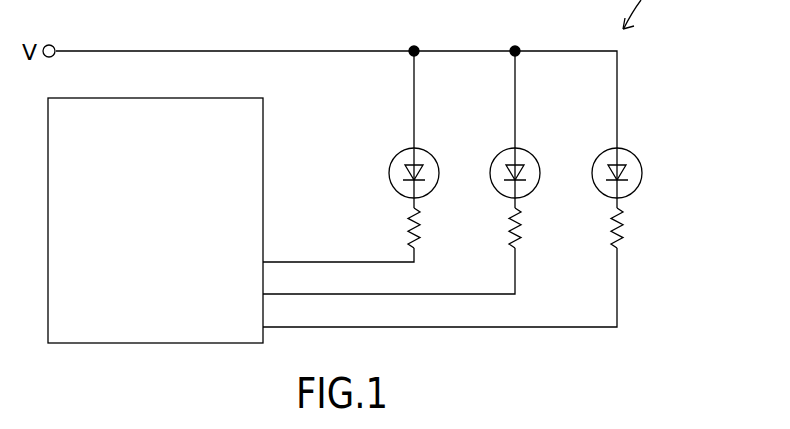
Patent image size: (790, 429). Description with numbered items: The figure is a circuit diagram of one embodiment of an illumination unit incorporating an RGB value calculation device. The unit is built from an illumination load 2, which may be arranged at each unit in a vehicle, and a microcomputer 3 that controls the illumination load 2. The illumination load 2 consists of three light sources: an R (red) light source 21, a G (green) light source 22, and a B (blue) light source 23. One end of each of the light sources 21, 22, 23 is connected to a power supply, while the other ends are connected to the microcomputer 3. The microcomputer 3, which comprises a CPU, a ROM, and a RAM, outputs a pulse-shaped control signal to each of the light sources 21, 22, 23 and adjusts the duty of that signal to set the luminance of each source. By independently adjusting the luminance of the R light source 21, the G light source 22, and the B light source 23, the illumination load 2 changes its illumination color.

The illumination load 2 is at (376, 186).
The microcomputer 3 is at (236, 98).
The R light source 21 is at (400, 150).
The G light source 22 is at (502, 150).
The B light source 23 is at (603, 150).